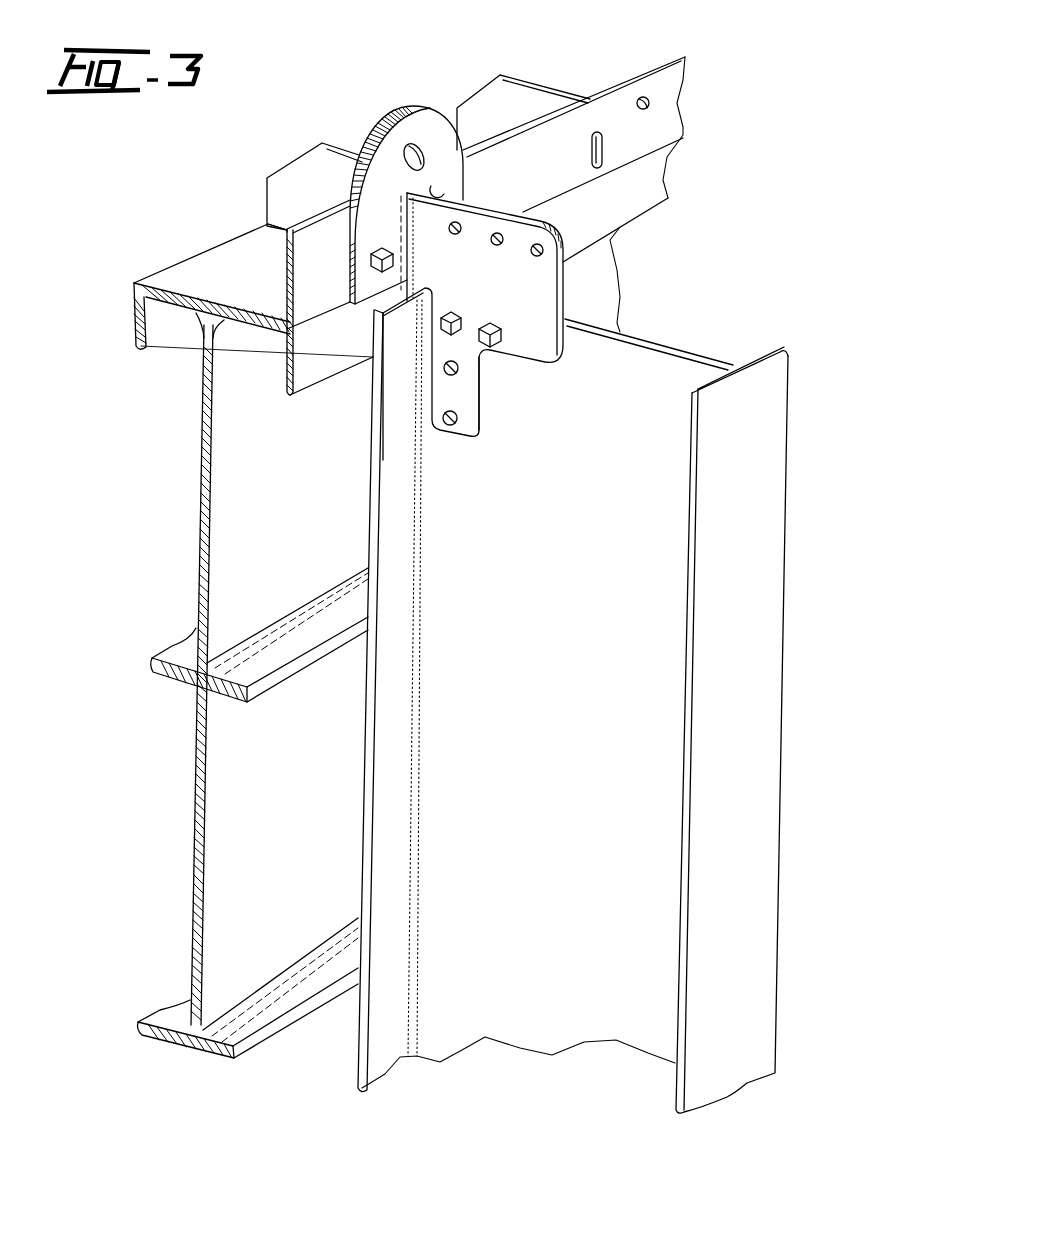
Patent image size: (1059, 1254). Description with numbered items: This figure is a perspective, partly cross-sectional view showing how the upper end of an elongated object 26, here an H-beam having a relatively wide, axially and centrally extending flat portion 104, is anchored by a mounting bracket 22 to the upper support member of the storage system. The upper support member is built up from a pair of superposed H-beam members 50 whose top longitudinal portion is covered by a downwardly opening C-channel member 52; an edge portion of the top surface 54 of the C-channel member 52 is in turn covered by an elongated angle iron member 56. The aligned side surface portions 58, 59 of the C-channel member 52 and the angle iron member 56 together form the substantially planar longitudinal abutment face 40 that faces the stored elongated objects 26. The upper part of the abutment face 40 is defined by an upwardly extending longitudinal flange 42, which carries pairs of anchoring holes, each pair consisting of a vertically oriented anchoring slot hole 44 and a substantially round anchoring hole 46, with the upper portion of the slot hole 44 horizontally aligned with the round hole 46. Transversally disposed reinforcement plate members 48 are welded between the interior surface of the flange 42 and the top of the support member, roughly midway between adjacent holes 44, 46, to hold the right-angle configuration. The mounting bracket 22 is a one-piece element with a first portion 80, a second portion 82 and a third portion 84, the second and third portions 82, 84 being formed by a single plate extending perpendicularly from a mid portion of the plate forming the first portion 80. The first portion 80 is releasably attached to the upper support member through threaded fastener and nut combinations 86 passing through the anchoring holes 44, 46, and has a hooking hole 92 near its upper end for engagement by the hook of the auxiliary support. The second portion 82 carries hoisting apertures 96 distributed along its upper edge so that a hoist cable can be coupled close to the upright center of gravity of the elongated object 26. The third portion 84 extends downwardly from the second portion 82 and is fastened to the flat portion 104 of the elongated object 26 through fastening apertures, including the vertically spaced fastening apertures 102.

The mounting bracket 22 is at (566, 300).
The elongated object 26 is at (595, 706).
The longitudinal abutment face 40 is at (631, 214).
The longitudinal flange 42 is at (683, 58).
The anchoring slot hole 44 is at (602, 152).
The round anchoring hole 46 is at (649, 104).
The reinforcement plate member 48 is at (533, 103).
The H-beam member 50 is at (197, 620).
The C-channel member 52 is at (134, 350).
The top surface 54 is at (177, 272).
The angle iron member 56 is at (277, 302).
The side surface portion 58 is at (296, 359).
The side surface portion 59 is at (296, 286).
The first portion 80 is at (398, 138).
The second portion 82 is at (540, 322).
The third portion 84 is at (467, 407).
The threaded fastener and nut combination 86 is at (381, 266).
The hooking hole 92 is at (422, 147).
The hoisting aperture 96 is at (537, 247).
The fastening aperture 102 is at (450, 425).
The flat portion 104 is at (521, 700).